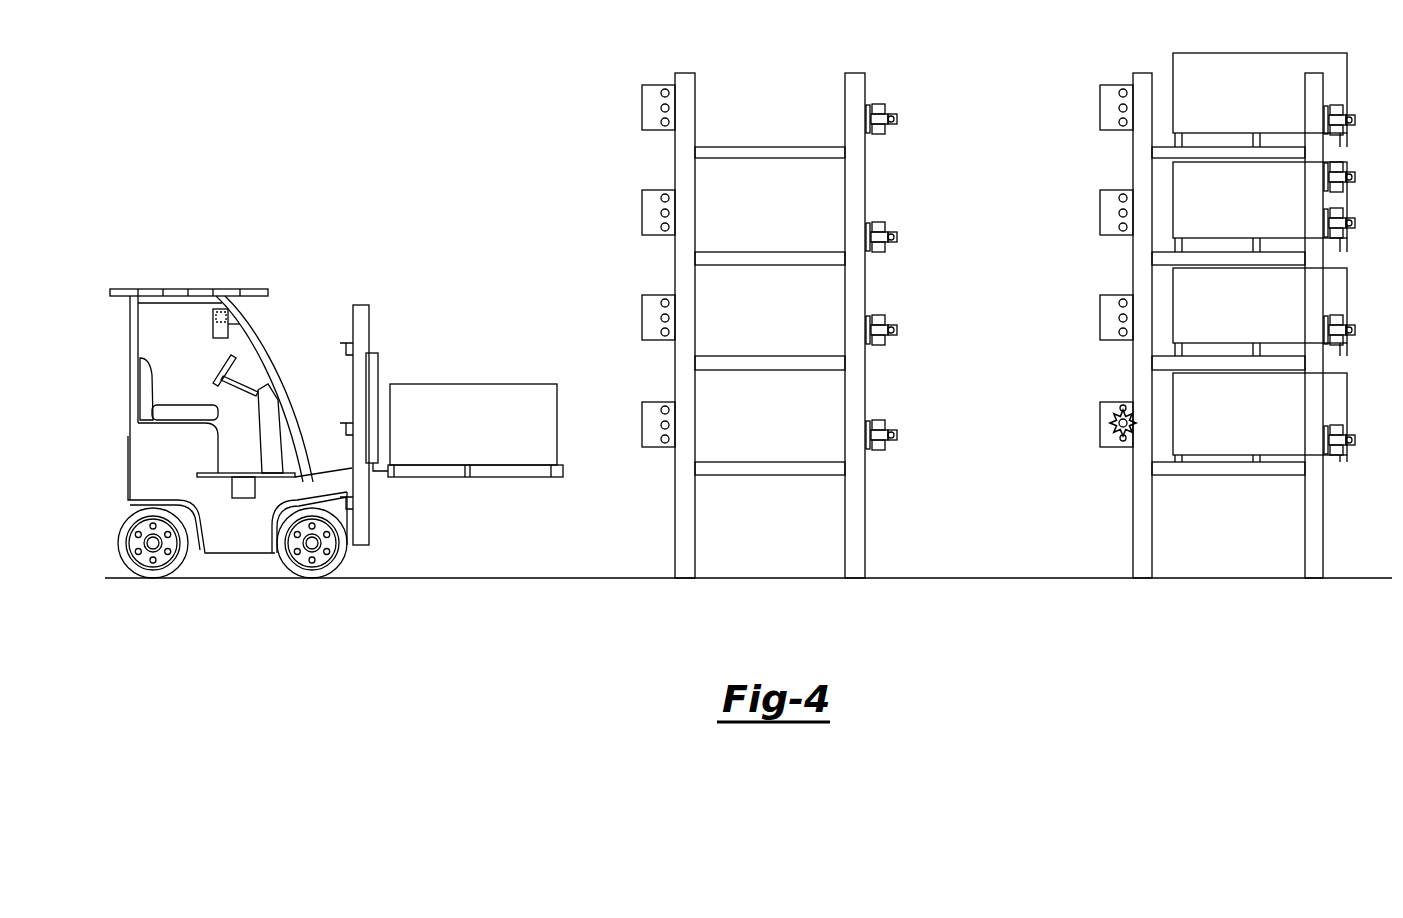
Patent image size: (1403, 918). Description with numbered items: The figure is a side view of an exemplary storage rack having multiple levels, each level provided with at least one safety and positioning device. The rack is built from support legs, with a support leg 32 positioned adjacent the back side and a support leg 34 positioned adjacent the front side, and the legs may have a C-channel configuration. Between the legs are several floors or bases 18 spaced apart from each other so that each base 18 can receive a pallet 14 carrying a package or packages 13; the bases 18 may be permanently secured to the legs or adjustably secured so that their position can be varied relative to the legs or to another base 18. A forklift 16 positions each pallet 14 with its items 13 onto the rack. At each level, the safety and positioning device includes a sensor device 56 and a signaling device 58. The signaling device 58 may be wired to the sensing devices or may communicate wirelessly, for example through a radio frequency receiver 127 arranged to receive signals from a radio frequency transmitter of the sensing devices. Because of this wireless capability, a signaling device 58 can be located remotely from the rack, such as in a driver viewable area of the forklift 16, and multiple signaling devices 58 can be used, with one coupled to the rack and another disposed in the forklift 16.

The items 13 is at (452, 384).
The pallet 14 is at (437, 477).
The forklift 16 is at (186, 288).
The base 18 is at (773, 152).
The support leg 32 is at (867, 548).
The support leg 34 is at (673, 548).
The sensor device 56 is at (893, 90).
The signaling device 58 is at (216, 342).
The radio frequency receiver 127 is at (224, 294).